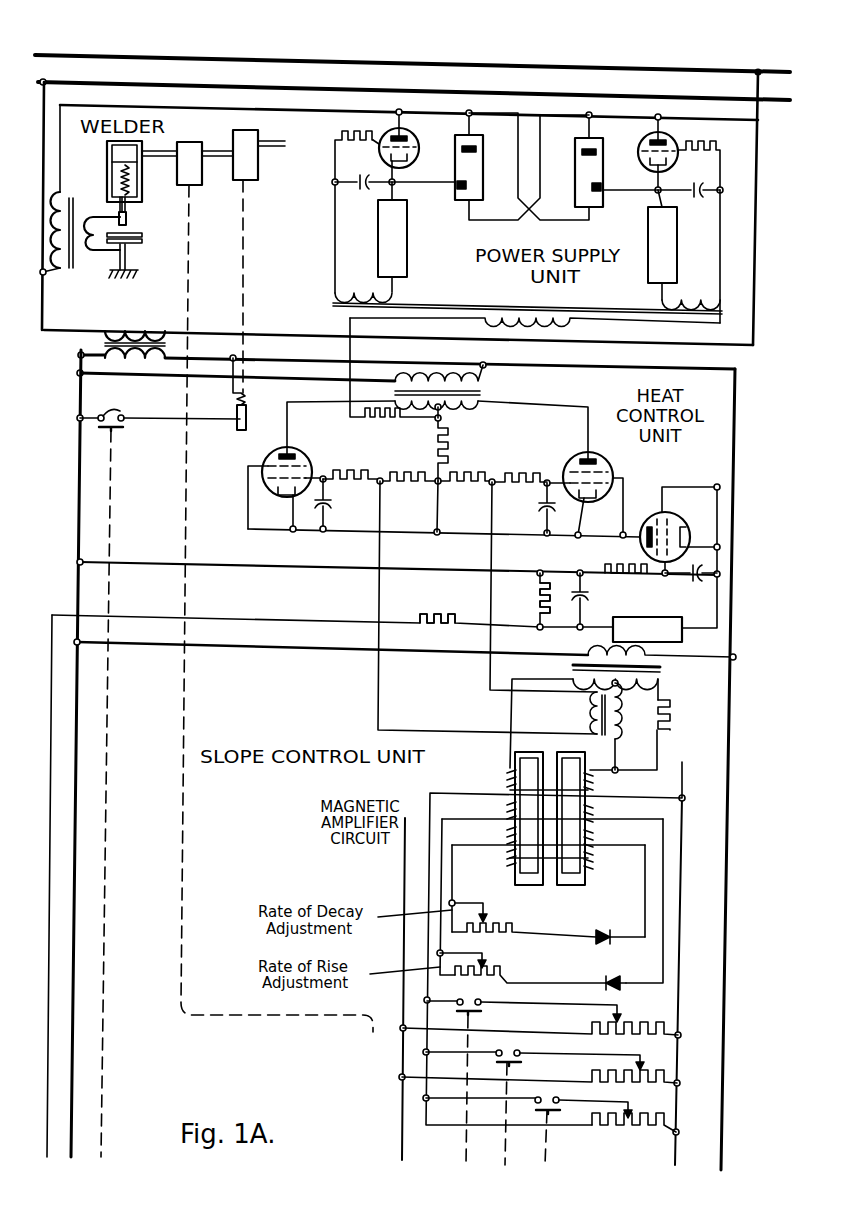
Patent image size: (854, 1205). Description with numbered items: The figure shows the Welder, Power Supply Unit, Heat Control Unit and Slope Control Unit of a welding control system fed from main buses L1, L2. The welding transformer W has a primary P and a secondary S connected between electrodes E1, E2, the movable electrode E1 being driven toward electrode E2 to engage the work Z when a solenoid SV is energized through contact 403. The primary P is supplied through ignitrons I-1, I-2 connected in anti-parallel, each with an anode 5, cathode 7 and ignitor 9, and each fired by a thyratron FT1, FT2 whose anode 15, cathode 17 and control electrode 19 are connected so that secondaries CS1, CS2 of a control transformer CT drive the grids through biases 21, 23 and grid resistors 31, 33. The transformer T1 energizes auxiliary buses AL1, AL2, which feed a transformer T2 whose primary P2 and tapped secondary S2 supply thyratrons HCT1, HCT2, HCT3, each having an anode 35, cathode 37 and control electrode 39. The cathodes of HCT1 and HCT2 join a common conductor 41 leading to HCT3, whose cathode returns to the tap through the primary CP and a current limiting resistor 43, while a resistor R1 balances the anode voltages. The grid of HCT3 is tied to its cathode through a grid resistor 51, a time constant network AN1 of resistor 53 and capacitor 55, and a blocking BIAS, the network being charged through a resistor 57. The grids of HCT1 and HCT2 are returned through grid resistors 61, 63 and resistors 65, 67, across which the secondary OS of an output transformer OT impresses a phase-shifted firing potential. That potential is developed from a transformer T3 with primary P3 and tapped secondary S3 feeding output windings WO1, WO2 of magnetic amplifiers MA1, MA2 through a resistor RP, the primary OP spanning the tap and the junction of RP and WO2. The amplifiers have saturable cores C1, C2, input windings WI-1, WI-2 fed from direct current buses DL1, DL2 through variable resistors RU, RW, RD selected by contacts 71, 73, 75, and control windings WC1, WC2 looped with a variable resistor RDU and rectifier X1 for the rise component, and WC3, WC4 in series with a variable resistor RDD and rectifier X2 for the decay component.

The bus conductor L1 is at (137, 55).
The bus conductor L2 is at (145, 83).
The welding transformer W is at (89, 161).
The welding electrode E1 is at (127, 222).
The welding electrode E2 is at (128, 252).
The work Z is at (143, 240).
The primary P is at (63, 274).
The secondary S is at (98, 217).
The transformer T1 is at (140, 331).
The firing thyratron FT1 is at (403, 165).
The firing thyratron FT2 is at (652, 165).
The ignitron I-1 is at (458, 136).
The ignitron I-2 is at (603, 137).
The anode 5 is at (478, 151).
The cathode 7 is at (478, 200).
The ignitor 9 is at (476, 184).
The anode 15 is at (396, 134).
The cathode 17 is at (386, 158).
The control electrode 19 is at (406, 146).
The bias 21 is at (378, 227).
The bias 23 is at (680, 240).
The grid resistor 31 is at (341, 139).
The grid resistor 33 is at (708, 144).
The secondary CS1 is at (363, 288).
The secondary CS2 is at (691, 256).
The control transformer CT is at (486, 301).
The primary CP is at (535, 317).
The auxiliary bus conductor AL1 is at (78, 474).
The auxiliary bus conductor AL2 is at (737, 432).
The contact 403 is at (112, 415).
The solenoid SV is at (238, 406).
The thyratron HCT1 is at (270, 457).
The thyratron HCT2 is at (612, 466).
The thyratron HCT3 is at (652, 555).
The anode 35 is at (291, 452).
The cathode 37 is at (283, 497).
The control electrode 39 is at (302, 471).
The common conductor 41 is at (438, 536).
The current limiting resistor 43 is at (368, 422).
The resistor R1 is at (451, 447).
The primary P2 is at (481, 385).
The transformer T2 is at (482, 394).
The secondary S2 is at (472, 406).
The grid resistor 61 is at (362, 489).
The grid resistor 63 is at (531, 489).
The resistor 65 is at (420, 489).
The resistor 67 is at (475, 489).
The grid resistor 51 is at (618, 586).
The resistor 53 is at (537, 609).
The capacitor 55 is at (589, 599).
The resistor 57 is at (441, 604).
The time constant network AN1 is at (549, 588).
The blocking bias BIAS is at (647, 629).
The primary P3 is at (592, 654).
The transformer T3 is at (661, 671).
The secondary S3 is at (584, 726).
The resistor RP is at (672, 716).
The secondary OS is at (596, 714).
The primary OP is at (622, 719).
The output transformer OT is at (622, 748).
The saturable core C1 is at (516, 886).
The saturable core C2 is at (561, 886).
The magnetic amplifier MA1 is at (500, 899).
The magnetic amplifier MA2 is at (632, 899).
The output winding WO1 is at (506, 779).
The output winding WO2 is at (594, 781).
The input winding WI-1 is at (506, 806).
The input winding WI-2 is at (594, 811).
The control winding WC1 is at (506, 836).
The control winding WC2 is at (594, 839).
The control winding WC3 is at (506, 859).
The control winding WC4 is at (594, 861).
The variable resistor RDD is at (502, 937).
The variable resistor RDU is at (505, 974).
The rectifier X1 is at (614, 977).
The rectifier X2 is at (611, 940).
The bus conductor DL1 is at (405, 880).
The bus conductor DL2 is at (683, 913).
The normally open contact 71 is at (474, 1015).
The normally open contact 73 is at (500, 1063).
The normally open contact 75 is at (534, 1108).
The variable resistor RU is at (591, 1027).
The variable resistor RW is at (591, 1078).
The variable resistor RD is at (630, 1124).